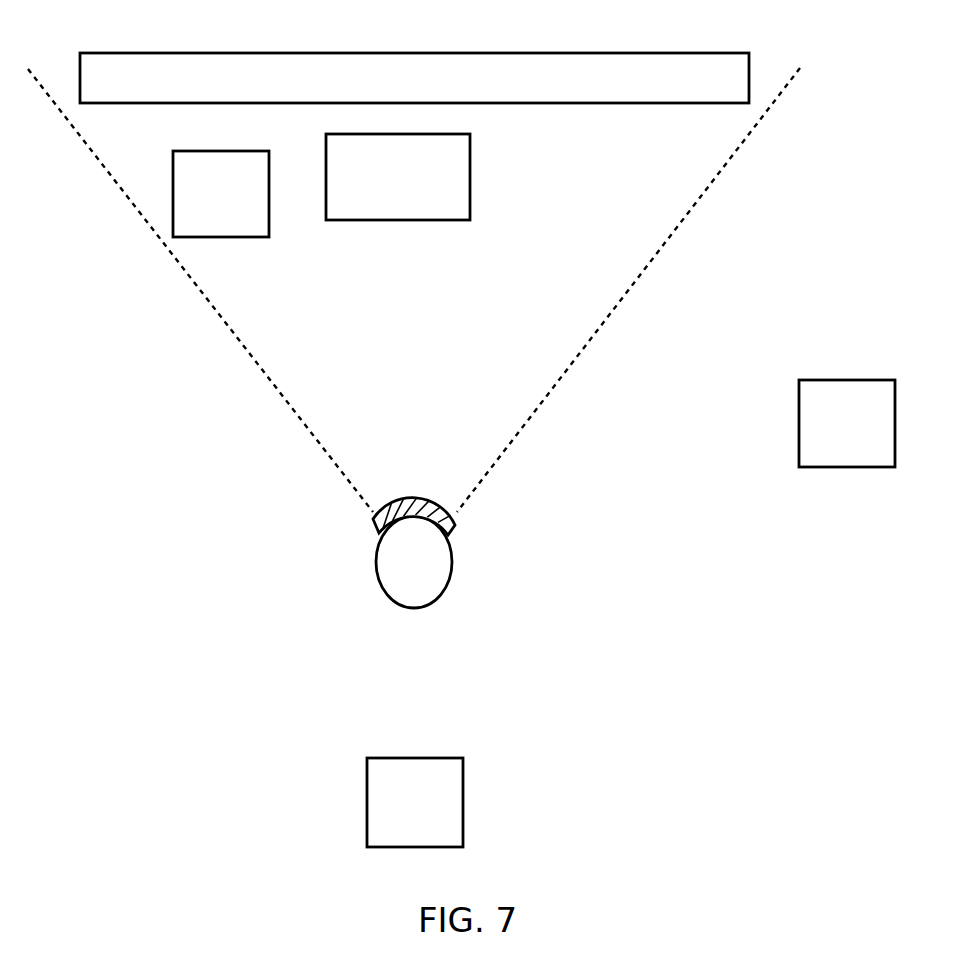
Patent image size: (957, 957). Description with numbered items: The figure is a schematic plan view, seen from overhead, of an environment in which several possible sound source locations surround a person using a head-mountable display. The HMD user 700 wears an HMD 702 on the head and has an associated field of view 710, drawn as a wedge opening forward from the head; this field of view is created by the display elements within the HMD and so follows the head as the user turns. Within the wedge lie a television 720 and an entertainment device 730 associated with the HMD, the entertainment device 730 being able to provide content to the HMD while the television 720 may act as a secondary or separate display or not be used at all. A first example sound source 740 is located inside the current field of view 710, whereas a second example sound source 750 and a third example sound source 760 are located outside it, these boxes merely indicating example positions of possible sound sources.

The HMD user 700 is at (451, 572).
The HMD 702 is at (456, 530).
The field of view 710 is at (580, 350).
The television 720 is at (660, 53).
The entertainment device 730 is at (406, 220).
The first example sound source 740 is at (246, 237).
The second example sound source 750 is at (845, 467).
The third example sound source 760 is at (463, 802).